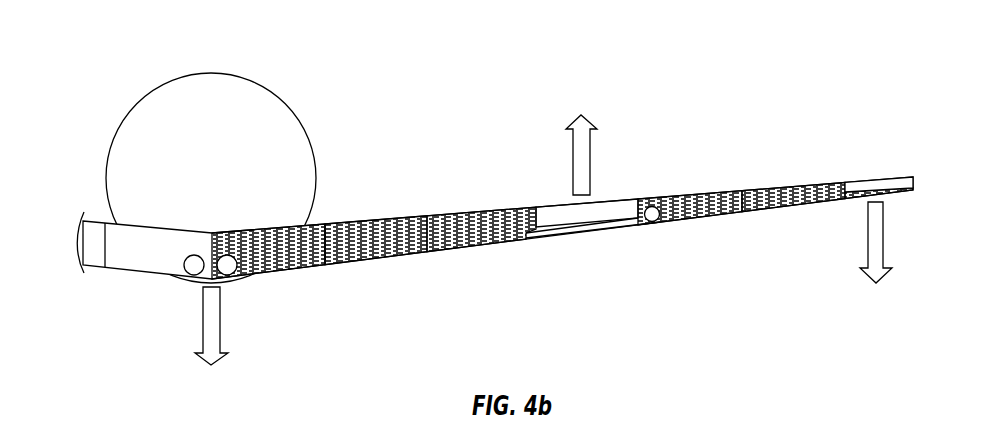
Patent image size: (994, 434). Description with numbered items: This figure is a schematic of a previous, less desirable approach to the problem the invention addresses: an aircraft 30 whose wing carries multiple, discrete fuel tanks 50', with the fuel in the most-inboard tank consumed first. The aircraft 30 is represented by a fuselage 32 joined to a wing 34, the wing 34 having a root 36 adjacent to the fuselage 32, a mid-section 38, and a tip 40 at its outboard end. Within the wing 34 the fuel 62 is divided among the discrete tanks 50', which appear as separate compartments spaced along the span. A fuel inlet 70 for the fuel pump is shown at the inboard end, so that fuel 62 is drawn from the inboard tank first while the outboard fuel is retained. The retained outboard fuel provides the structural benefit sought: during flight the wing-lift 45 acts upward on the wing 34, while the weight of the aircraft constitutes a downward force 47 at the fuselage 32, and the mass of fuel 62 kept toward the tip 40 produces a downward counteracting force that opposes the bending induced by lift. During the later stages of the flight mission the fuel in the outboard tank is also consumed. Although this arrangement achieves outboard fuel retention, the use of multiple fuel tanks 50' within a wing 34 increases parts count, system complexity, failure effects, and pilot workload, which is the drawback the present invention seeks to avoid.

The aircraft 30 is at (553, 65).
The fuselage 32 is at (286, 96).
The wing 34 is at (480, 208).
The root 36 is at (316, 221).
The mid-section 38 is at (483, 273).
The tip 40 is at (910, 163).
The wing-lift 45 is at (581, 142).
The force 47 is at (211, 341).
The beam segments 50' is at (827, 224).
The fuel 62 is at (680, 208).
The fuel inlet 70 is at (243, 267).